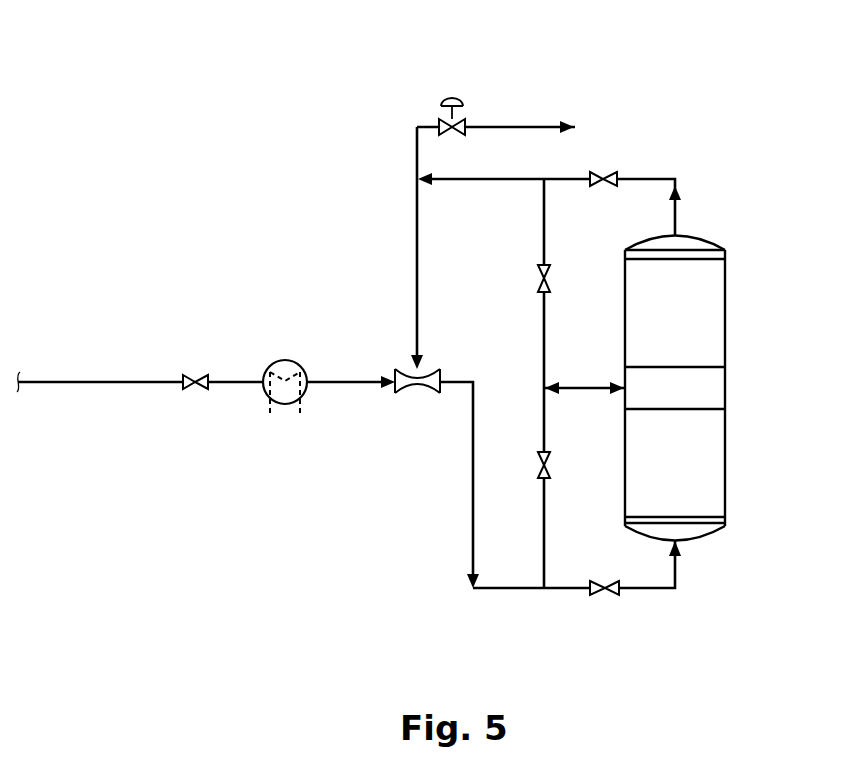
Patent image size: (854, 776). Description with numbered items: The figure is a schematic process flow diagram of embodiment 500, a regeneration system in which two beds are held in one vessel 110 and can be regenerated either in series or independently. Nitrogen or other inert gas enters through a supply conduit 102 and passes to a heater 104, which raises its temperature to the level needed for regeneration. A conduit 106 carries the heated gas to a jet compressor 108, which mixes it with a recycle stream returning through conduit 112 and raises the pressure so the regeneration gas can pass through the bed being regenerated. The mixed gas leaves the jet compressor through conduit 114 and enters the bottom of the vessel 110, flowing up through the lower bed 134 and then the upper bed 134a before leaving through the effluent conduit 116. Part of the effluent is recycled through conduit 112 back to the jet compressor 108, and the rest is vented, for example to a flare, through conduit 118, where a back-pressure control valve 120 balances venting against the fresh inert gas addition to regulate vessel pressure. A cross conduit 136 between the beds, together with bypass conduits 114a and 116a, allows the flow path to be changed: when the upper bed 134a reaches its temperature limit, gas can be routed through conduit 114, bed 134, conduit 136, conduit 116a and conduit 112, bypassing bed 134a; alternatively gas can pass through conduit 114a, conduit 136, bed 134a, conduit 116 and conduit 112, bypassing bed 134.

The embodiment 500 is at (226, 237).
The supply conduit 102 is at (112, 380).
The heater 104 is at (262, 394).
The conduit 106 is at (348, 380).
The jet compressor 108 is at (430, 394).
The vessel 110 is at (727, 389).
The conduit 112 is at (416, 240).
The conduit 114 is at (635, 590).
The conduit 114a is at (545, 537).
The effluent conduit 116 is at (625, 178).
The conduit 116a is at (543, 210).
The conduit 118 is at (518, 125).
The back-pressure control valve 120 is at (447, 100).
The bed 134 is at (698, 479).
The bed 134a is at (708, 328).
The conduit 136 is at (585, 386).